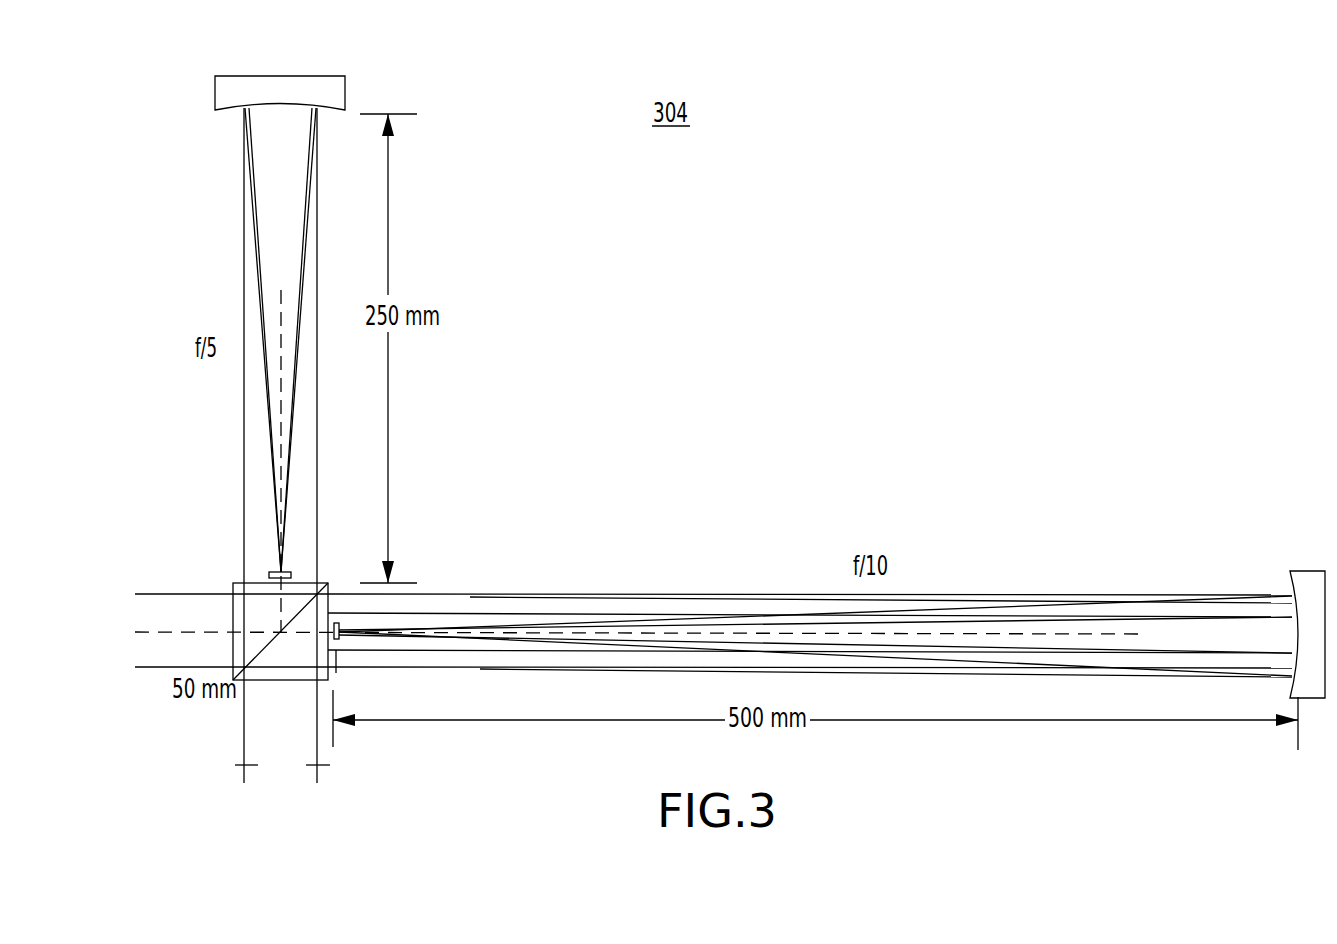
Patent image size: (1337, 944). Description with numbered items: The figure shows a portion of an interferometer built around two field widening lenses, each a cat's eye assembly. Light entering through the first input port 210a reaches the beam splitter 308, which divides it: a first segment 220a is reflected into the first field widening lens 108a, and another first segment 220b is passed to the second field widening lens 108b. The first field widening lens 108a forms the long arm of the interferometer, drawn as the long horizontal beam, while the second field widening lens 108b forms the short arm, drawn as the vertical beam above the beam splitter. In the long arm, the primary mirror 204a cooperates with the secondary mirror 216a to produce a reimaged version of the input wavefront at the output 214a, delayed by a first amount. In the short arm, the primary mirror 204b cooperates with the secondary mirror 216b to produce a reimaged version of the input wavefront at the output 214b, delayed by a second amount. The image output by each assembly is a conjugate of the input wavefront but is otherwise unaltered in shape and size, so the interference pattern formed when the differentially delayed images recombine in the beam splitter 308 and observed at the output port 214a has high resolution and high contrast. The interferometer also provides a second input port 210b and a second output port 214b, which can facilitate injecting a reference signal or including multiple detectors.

The primary mirror of the first field widening lens 204a is at (1305, 571).
The primary mirror of the second field widening lens 204b is at (338, 76).
The first field widening lens 108a is at (824, 572).
The second field widening lens 108b is at (348, 273).
The first segment 220a is at (497, 594).
The another first segment 220b is at (317, 492).
The first input port 210a is at (320, 770).
The second input port 210b is at (190, 594).
The output of the first field widening lens 214a is at (244, 770).
The output of the second field widening lens 214b is at (208, 666).
The secondary mirror of the first field widening lens 216a is at (339, 640).
The secondary mirror of the second field widening lens 216b is at (291, 576).
The beam splitter 308 is at (232, 583).